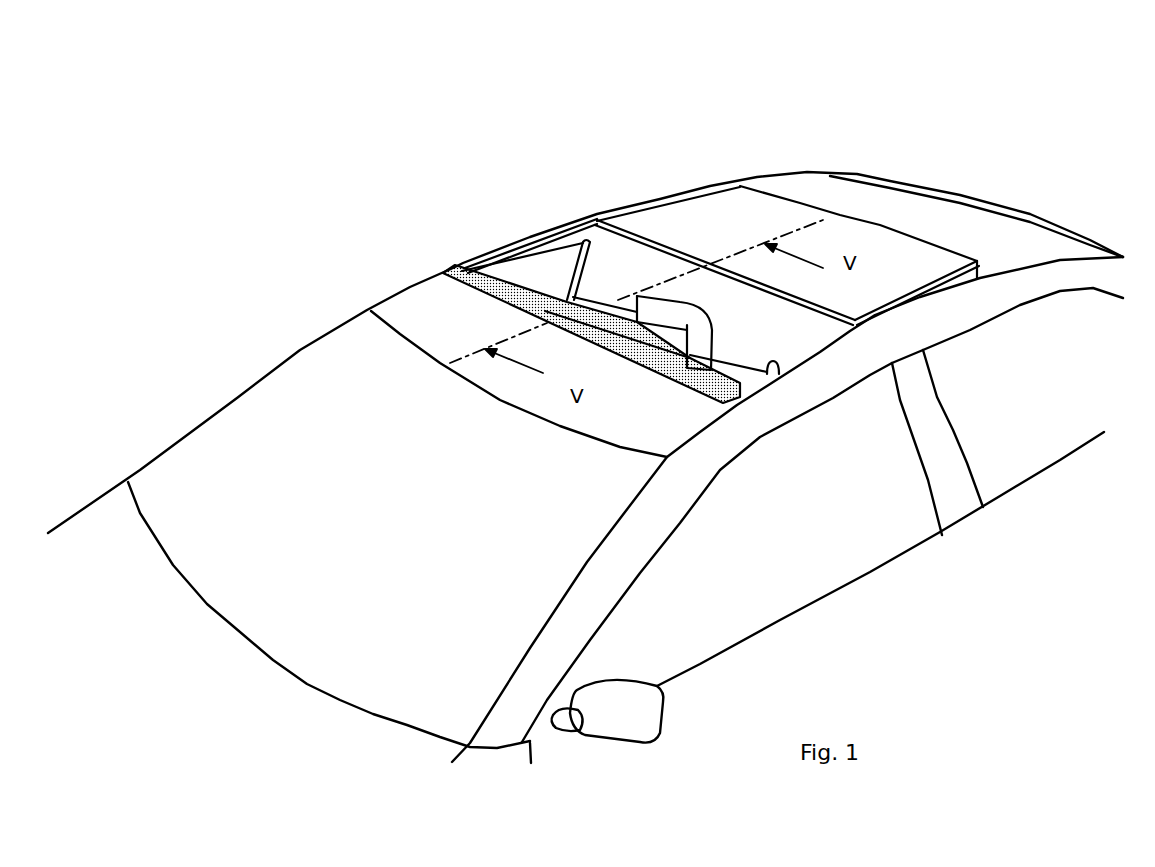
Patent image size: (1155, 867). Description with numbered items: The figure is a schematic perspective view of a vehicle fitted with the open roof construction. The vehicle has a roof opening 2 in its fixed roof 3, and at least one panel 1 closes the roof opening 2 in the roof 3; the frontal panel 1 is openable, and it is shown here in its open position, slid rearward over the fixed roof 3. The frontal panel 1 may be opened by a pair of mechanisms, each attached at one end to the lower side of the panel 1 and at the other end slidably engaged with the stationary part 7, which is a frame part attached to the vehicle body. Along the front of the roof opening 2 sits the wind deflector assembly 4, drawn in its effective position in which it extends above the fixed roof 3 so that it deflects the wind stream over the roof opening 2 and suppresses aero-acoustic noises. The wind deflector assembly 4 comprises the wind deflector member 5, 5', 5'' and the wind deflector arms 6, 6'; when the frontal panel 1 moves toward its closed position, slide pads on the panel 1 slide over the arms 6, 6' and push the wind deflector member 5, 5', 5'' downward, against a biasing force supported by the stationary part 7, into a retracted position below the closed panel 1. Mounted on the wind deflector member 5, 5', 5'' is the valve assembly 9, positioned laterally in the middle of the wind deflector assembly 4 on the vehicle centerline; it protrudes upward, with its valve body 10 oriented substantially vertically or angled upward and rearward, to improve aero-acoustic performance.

The panel 1 is at (585, 290).
The roof opening 2 is at (551, 176).
The fixed roof 3 is at (511, 251).
The wind deflector assembly 4 is at (449, 250).
The wind deflector member 5 is at (828, 414).
The wind deflector member 5' is at (724, 275).
The wind deflector member 5'' is at (918, 295).
The wind deflector arm 6 is at (814, 511).
The wind deflector arm 6' is at (522, 157).
The stationary part 7 is at (607, 266).
The valve assembly 9 is at (603, 322).
The valve body 10 is at (662, 326).